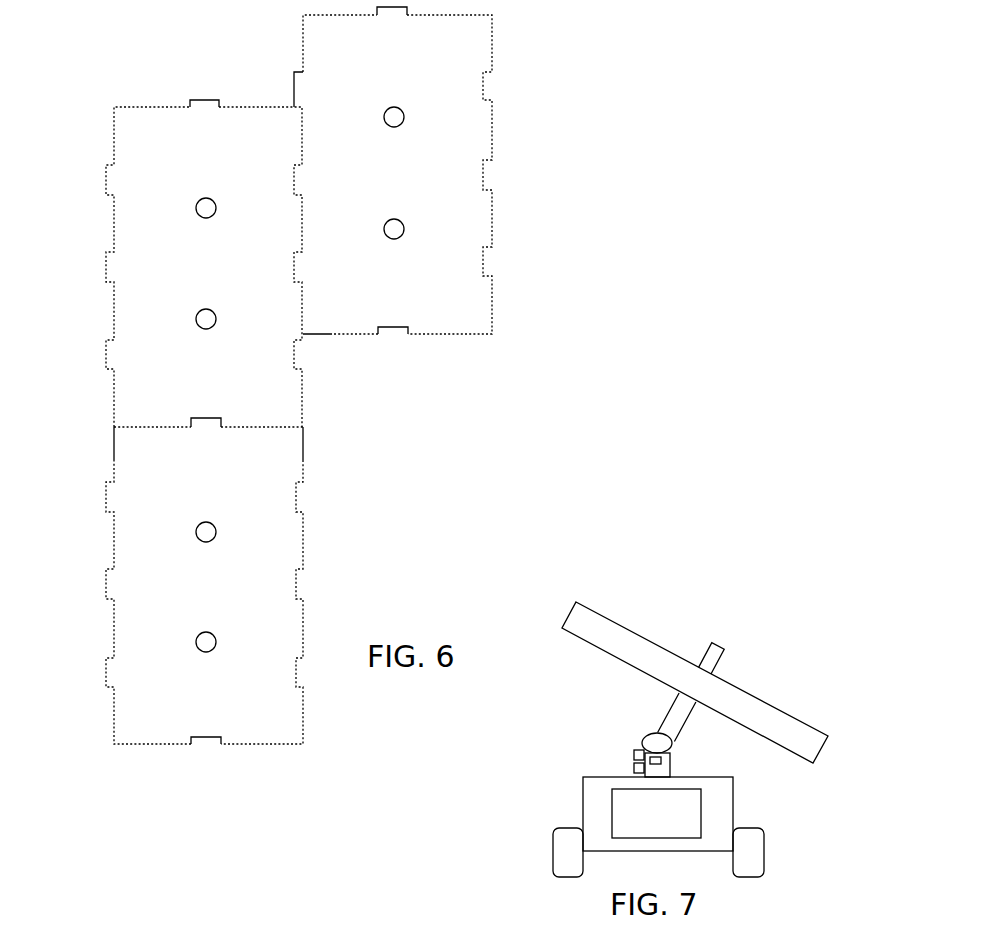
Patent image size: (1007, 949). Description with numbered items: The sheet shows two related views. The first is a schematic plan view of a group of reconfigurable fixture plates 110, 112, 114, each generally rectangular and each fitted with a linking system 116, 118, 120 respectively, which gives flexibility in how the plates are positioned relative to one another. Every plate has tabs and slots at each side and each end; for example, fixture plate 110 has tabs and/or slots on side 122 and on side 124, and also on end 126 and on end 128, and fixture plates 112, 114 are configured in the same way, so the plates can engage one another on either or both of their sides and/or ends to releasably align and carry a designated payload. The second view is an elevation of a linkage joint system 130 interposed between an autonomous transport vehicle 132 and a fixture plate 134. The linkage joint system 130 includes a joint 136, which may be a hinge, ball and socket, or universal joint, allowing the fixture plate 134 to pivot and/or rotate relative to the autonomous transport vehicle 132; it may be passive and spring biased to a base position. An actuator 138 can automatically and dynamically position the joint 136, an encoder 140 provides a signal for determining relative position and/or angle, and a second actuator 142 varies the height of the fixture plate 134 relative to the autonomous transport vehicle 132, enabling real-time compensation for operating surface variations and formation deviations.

In FIG. 6, the fixture plate 110 is at (260, 160).
In FIG. 6, the fixture plate 112 is at (466, 127).
In FIG. 6, the fixture plate 114 is at (290, 537).
In FIG. 6, the linking system 116 is at (300, 353).
In FIG. 6, the linking system 118 is at (487, 263).
In FIG. 6, the linking system 120 is at (298, 582).
In FIG. 6, the side 122 is at (114, 232).
In FIG. 6, the side 124 is at (303, 128).
In FIG. 6, the end 126 is at (162, 107).
In FIG. 6, the end 128 is at (134, 427).
In FIG. 7, the linkage joint system 130 is at (667, 739).
In FIG. 7, the autonomous transport vehicle 132 is at (733, 792).
In FIG. 7, the fixture plate 134 is at (760, 697).
In FIG. 7, the joint 136 is at (645, 733).
In FIG. 7, the actuator 138 is at (634, 755).
In FIG. 7, the encoder 140 is at (672, 762).
In FIG. 7, the second actuator 142 is at (634, 768).